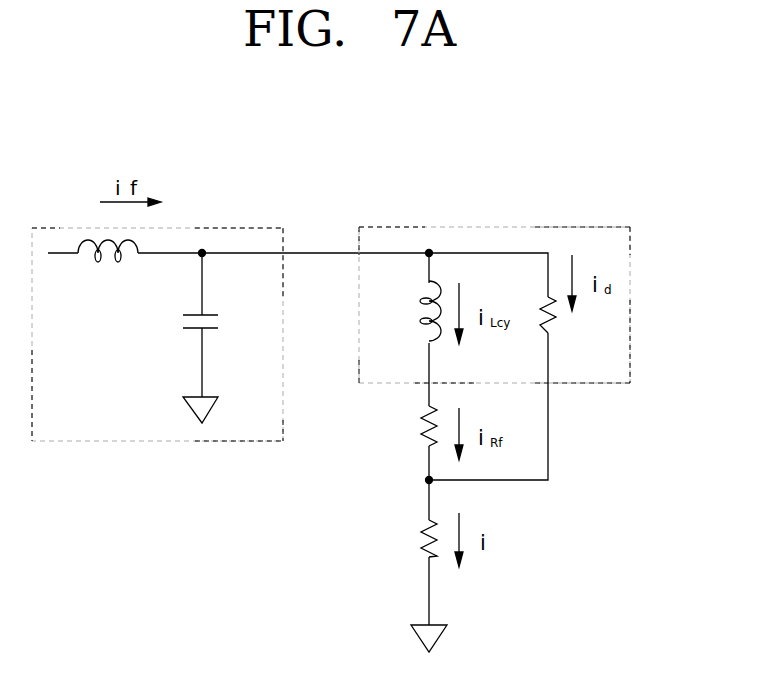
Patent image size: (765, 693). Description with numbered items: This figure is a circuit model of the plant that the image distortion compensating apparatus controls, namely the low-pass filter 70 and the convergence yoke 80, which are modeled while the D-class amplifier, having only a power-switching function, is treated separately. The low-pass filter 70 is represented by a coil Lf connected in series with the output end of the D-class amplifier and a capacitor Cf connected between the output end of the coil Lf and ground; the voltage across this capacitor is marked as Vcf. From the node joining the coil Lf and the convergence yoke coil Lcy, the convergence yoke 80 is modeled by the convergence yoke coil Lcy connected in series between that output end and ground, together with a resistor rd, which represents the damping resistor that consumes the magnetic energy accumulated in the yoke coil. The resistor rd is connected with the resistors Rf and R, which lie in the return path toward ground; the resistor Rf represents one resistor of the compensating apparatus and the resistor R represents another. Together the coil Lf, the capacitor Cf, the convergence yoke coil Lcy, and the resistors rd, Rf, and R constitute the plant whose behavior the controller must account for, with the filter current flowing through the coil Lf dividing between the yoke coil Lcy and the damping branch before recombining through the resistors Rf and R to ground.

The low-pass filter 70 is at (233, 227).
The convergence yoke 80 is at (539, 227).
The coil Lf is at (108, 266).
The capacitor Cf is at (217, 338).
The filter capacitor voltage Vcf is at (204, 256).
The convergence yoke coil Lcy is at (412, 311).
The resistor rd is at (560, 327).
The resistor Rf is at (420, 429).
The resistor R is at (418, 537).